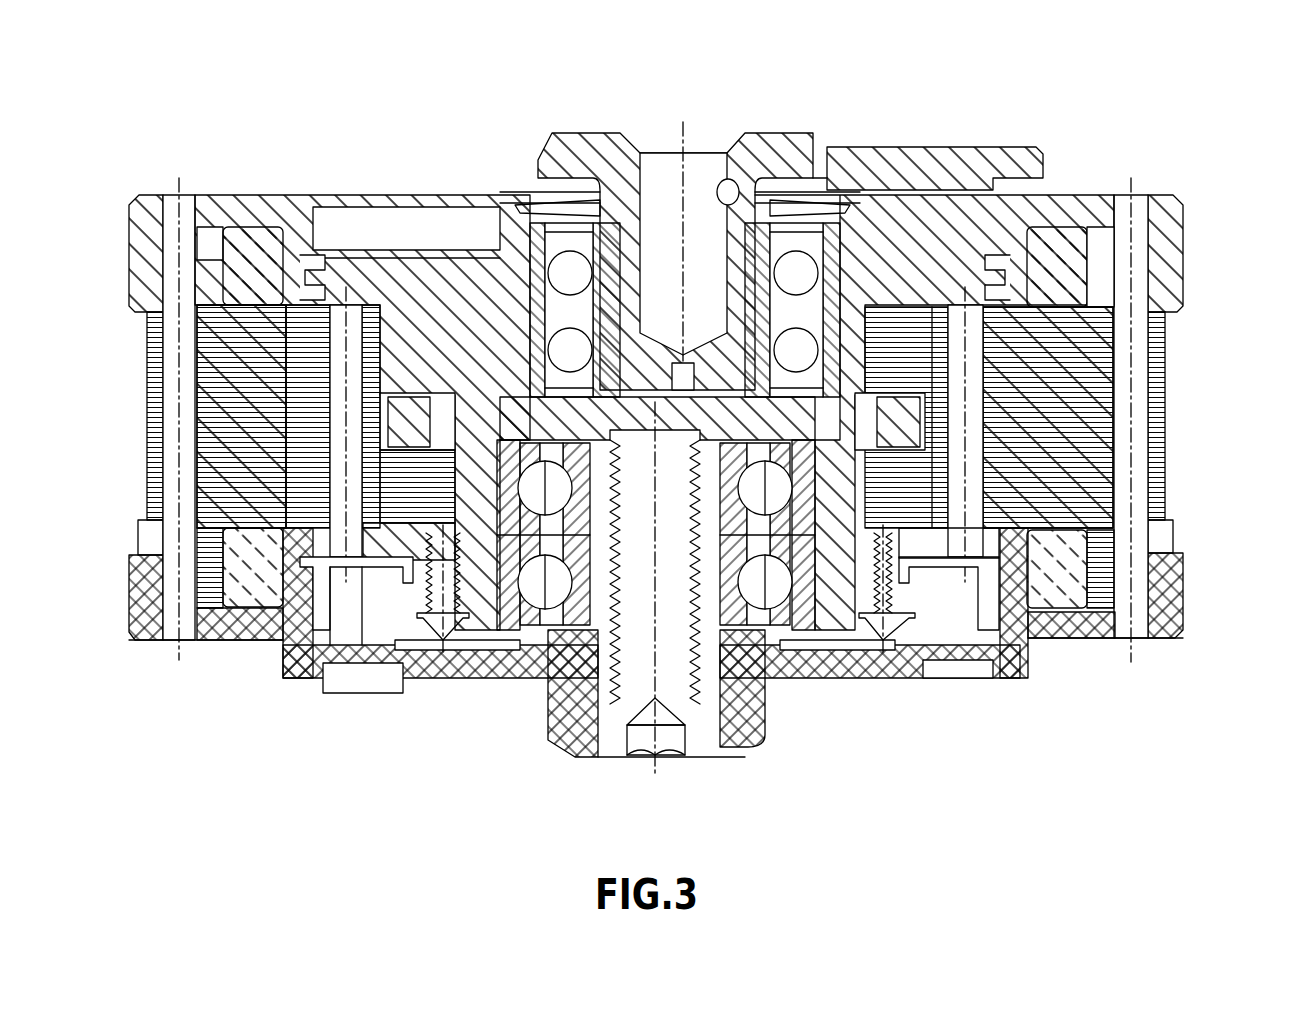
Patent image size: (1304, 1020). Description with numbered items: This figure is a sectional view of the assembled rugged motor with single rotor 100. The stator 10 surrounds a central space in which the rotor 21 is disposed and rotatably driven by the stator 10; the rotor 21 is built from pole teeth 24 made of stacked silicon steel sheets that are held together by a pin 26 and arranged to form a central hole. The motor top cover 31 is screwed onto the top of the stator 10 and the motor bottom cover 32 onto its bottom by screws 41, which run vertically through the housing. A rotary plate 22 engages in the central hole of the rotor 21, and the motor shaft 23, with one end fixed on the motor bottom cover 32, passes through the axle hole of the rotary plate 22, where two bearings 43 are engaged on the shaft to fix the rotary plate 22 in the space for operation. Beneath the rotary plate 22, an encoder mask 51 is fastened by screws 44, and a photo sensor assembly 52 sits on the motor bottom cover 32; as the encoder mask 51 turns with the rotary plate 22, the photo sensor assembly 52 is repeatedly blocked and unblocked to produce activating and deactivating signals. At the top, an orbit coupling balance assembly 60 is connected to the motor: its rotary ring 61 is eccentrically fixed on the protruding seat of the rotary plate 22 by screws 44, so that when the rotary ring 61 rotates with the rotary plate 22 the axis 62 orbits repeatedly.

The rugged motor with single rotor 100 is at (140, 426).
The stator 10 is at (1160, 405).
The rotor 21 is at (1005, 365).
The rotary plate 22 is at (935, 560).
The motor shaft 23 is at (713, 650).
The pole teeth 24 is at (698, 737).
The pin 26 is at (1040, 548).
The motor top cover 31 is at (1165, 222).
The motor bottom cover 32 is at (890, 657).
The screws 41 is at (1138, 470).
The bearing 43 is at (778, 595).
The screws 44 is at (436, 642).
The encoder mask 51 is at (386, 618).
The photo sensor assembly 52 is at (292, 650).
The orbit coupling balance assembly 60 is at (797, 130).
The rotary ring 61 is at (905, 160).
The axis 62 is at (748, 200).